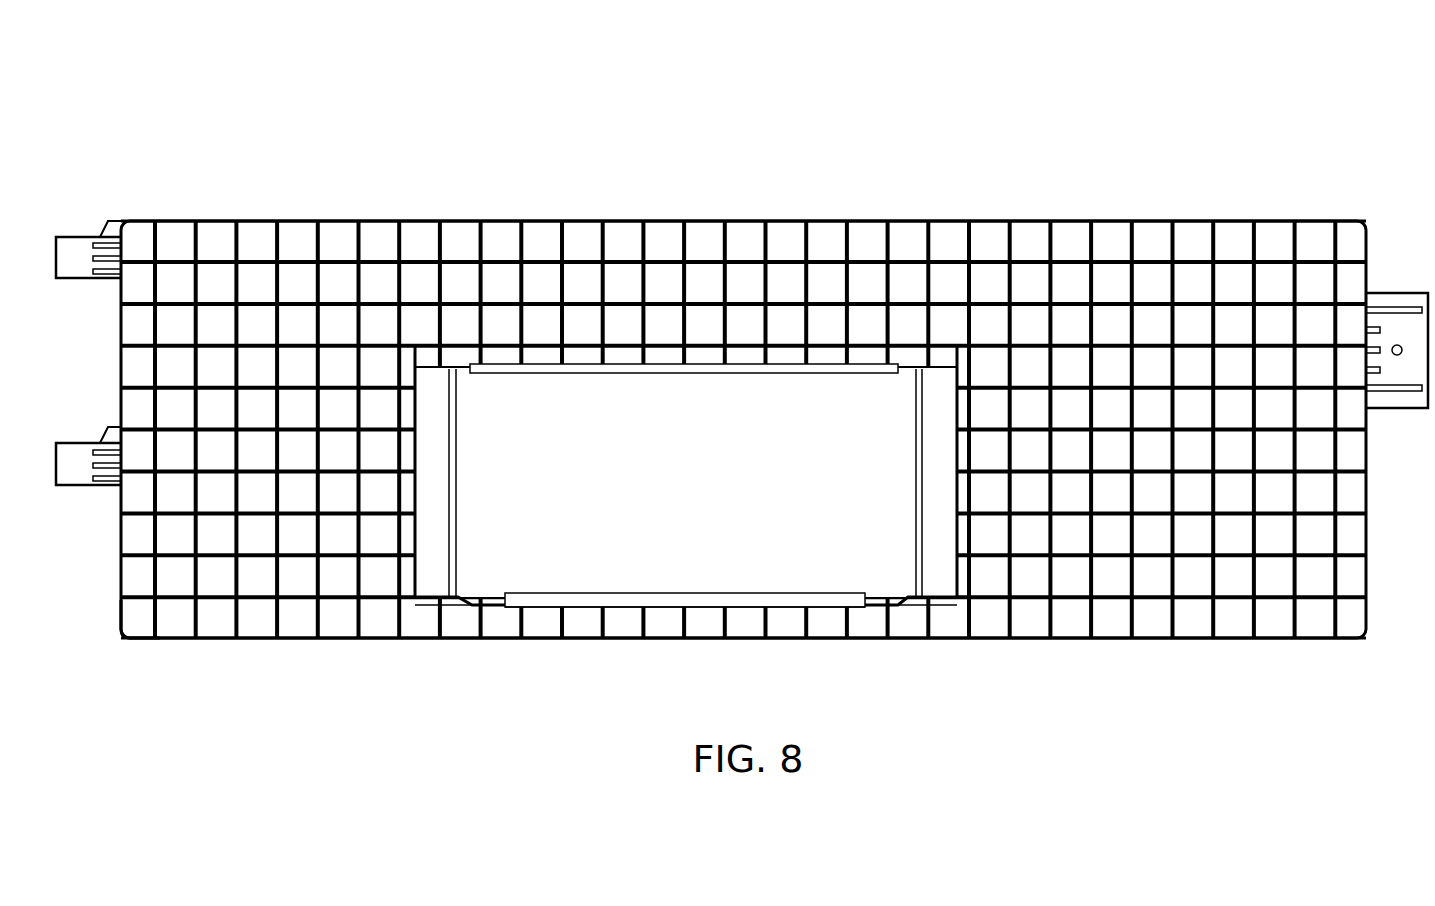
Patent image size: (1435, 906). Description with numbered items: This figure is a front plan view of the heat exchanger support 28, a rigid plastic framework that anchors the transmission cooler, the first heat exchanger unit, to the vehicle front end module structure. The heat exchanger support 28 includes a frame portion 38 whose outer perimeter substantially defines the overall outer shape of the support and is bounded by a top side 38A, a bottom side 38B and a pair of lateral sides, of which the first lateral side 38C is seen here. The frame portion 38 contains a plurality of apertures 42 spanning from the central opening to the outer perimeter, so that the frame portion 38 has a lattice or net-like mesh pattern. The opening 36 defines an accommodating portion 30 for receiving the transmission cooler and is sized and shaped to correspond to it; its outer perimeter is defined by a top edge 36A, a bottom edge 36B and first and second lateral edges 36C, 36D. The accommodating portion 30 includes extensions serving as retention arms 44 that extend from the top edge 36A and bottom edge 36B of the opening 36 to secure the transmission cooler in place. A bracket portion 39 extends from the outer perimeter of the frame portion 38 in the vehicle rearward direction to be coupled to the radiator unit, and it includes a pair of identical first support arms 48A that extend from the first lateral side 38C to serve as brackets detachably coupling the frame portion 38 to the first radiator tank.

The heat exchanger support 28 is at (742, 377).
The accommodating portion 30 is at (587, 601).
The opening 36 is at (686, 483).
The top edge 36A is at (585, 373).
The bottom edge 36B is at (745, 594).
The first lateral edge 36C is at (418, 498).
The second lateral edge 36D is at (955, 453).
The frame portion 38 is at (716, 426).
The top side 38A is at (582, 221).
The bottom side 38B is at (964, 640).
The first lateral side 38C is at (117, 612).
The bracket portion 39 is at (74, 233).
The apertures 42 is at (1070, 245).
The retention arms 44 is at (660, 364).
The first support arm 48A is at (75, 280).